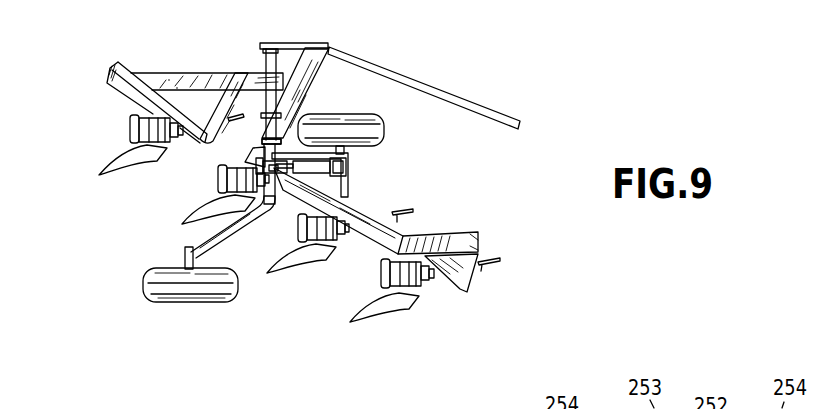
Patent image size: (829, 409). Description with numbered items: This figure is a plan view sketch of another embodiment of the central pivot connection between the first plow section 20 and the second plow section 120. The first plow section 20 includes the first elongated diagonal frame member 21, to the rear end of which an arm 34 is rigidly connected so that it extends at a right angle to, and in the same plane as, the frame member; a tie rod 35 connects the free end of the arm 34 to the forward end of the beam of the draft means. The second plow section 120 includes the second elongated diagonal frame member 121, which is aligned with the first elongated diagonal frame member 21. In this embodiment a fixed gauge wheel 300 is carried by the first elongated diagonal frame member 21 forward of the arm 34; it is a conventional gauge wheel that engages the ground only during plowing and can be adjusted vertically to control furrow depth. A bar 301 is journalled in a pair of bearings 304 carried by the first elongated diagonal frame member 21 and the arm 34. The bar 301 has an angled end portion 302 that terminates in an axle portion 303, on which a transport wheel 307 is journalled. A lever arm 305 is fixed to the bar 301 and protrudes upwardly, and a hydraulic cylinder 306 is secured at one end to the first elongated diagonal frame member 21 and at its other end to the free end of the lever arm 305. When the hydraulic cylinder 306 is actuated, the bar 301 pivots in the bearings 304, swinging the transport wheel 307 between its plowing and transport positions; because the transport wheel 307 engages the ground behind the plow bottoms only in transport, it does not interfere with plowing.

The first plow section 20 is at (405, 332).
The first elongated diagonal frame member 21 is at (453, 290).
The arm 34 is at (310, 70).
The tie rod 35 is at (480, 88).
The second plow section 120 is at (114, 119).
The second elongated diagonal frame member 121 is at (128, 80).
The fixed gauge wheel 300 is at (383, 135).
The bar 301 is at (262, 145).
The angled end portion 302 is at (233, 238).
The axle portion 303 is at (183, 257).
The bearings 304 is at (280, 138).
The lever arm 305 is at (263, 163).
The hydraulic cylinder 306 is at (349, 193).
The transport wheel 307 is at (177, 296).